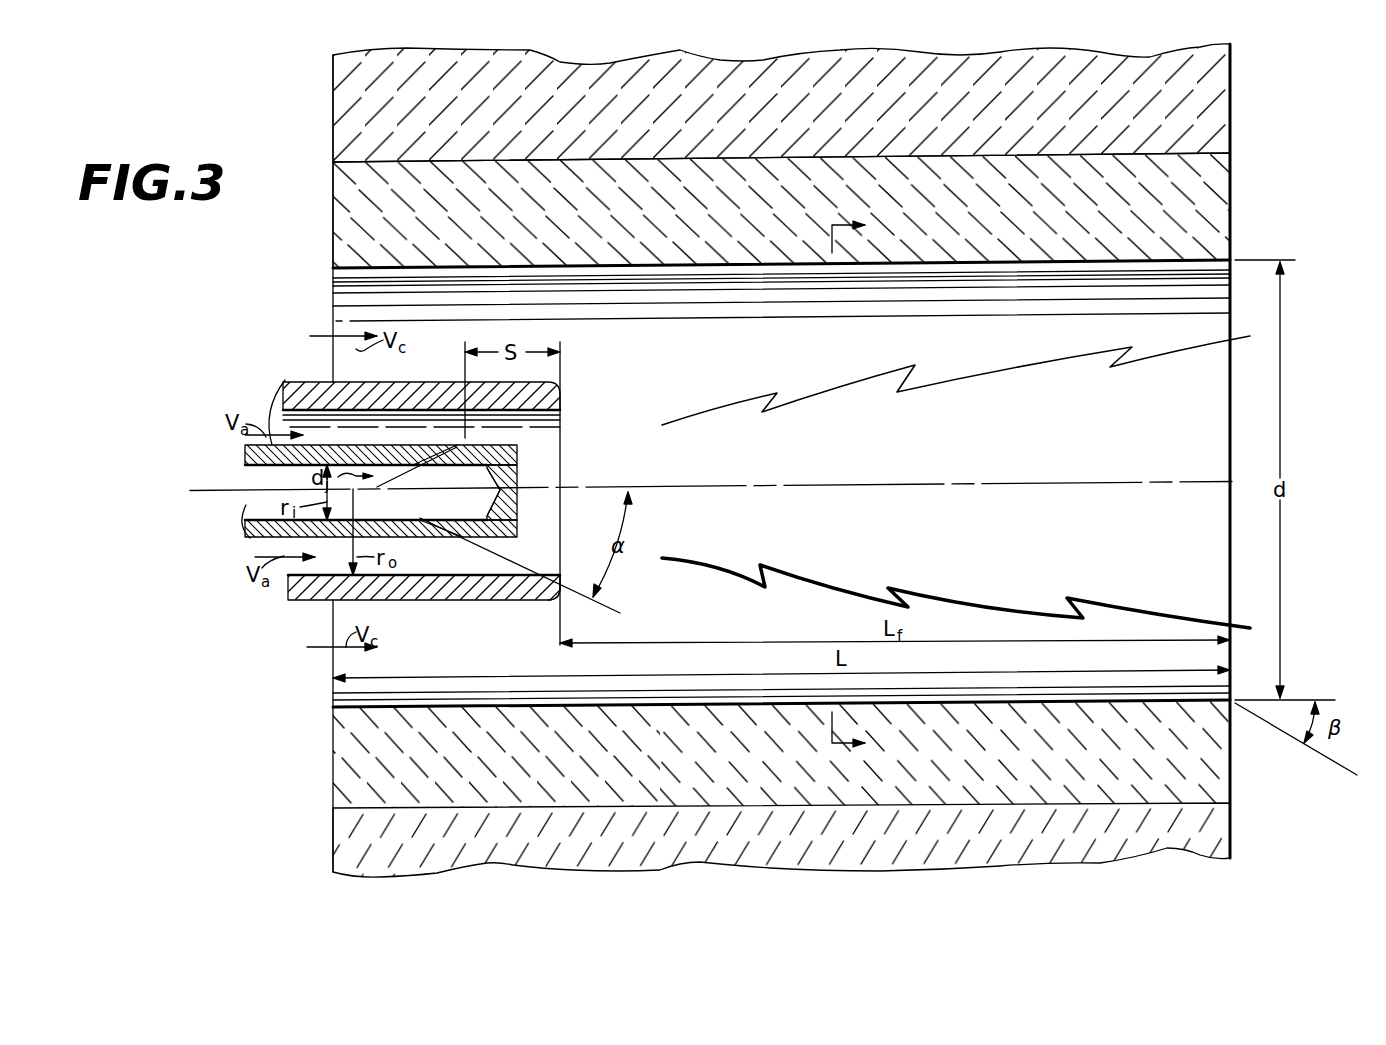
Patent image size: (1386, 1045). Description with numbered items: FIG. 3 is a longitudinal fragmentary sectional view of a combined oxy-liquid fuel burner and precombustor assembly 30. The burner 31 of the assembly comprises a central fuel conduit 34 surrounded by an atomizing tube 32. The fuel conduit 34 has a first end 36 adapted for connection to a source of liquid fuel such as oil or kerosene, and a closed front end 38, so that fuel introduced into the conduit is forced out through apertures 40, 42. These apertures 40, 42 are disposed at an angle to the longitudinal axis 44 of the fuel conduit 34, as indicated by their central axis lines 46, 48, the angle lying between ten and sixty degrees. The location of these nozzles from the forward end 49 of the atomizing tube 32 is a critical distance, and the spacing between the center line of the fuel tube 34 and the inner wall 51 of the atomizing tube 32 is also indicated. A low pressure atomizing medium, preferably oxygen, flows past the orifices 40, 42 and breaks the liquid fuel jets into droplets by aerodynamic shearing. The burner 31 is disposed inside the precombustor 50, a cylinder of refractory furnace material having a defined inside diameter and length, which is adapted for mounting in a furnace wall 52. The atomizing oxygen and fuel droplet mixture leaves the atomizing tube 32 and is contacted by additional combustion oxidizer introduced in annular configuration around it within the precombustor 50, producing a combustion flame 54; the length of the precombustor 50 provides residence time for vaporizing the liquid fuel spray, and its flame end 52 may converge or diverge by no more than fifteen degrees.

The oxy-liquid fuel burner and precombustor combination 30 is at (819, 460).
The burner 31 is at (403, 469).
The atomizing tube 32 is at (297, 381).
The central fuel conduit 34 is at (245, 458).
The first end of fuel conduit 36 is at (245, 520).
The front end of fuel conduit 38 is at (517, 463).
The aperture 40 is at (388, 496).
The aperture 42 is at (455, 537).
The longitudinal axis 44 is at (475, 492).
The central axis line of aperture 46 is at (457, 447).
The central axis line of aperture 48 is at (508, 574).
The forward end of atomizing tube 49 is at (562, 396).
The precombustor 50 is at (1235, 232).
The inner wall of atomizing tube 51 is at (500, 575).
The furnace wall 52 is at (1233, 97).
The combustion flame 54 is at (823, 392).